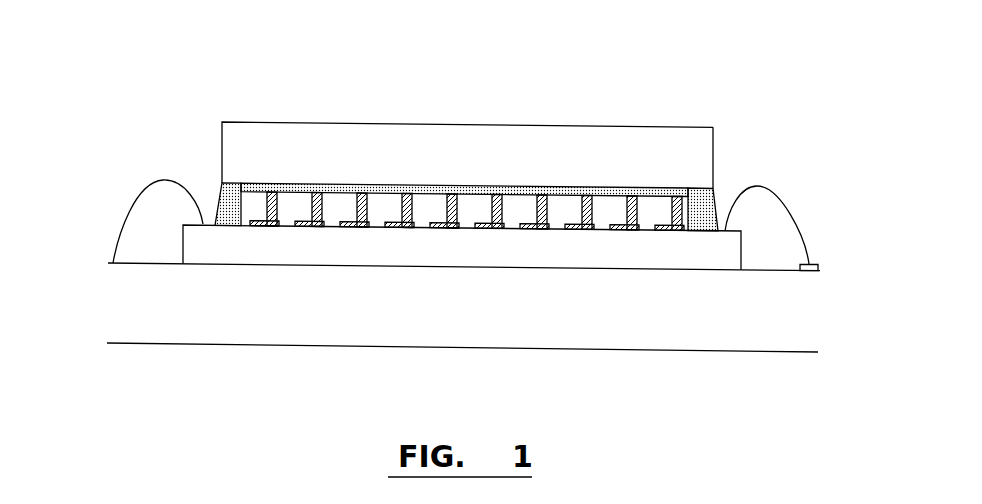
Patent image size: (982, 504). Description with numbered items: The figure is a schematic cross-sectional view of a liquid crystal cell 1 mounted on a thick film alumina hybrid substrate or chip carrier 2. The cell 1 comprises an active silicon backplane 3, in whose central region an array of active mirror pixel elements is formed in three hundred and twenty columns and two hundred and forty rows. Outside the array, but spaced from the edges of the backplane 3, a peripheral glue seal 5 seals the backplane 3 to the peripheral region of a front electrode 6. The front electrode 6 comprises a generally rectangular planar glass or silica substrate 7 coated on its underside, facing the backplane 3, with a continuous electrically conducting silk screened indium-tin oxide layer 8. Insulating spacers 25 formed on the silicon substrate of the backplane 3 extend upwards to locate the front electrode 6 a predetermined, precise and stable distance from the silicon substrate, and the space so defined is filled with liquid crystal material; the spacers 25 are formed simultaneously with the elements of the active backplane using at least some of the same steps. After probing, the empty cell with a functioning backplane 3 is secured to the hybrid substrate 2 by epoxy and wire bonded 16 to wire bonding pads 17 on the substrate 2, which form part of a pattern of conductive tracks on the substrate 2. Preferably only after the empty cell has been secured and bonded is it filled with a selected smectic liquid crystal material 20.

The liquid crystal cell 1 is at (507, 105).
The hybrid substrate 2 is at (445, 318).
The active silicon backplane 3 is at (445, 259).
The peripheral glue seal 5 is at (217, 189).
The front electrode 6 is at (716, 144).
The glass or silica substrate 7 is at (507, 105).
The indium-tin oxide layer 8 is at (383, 184).
The wire bond 16 is at (135, 190).
The wire bonding pads 17 is at (814, 262).
The smectic liquid crystal material 20 is at (477, 201).
The insulating spacers 25 is at (276, 205).